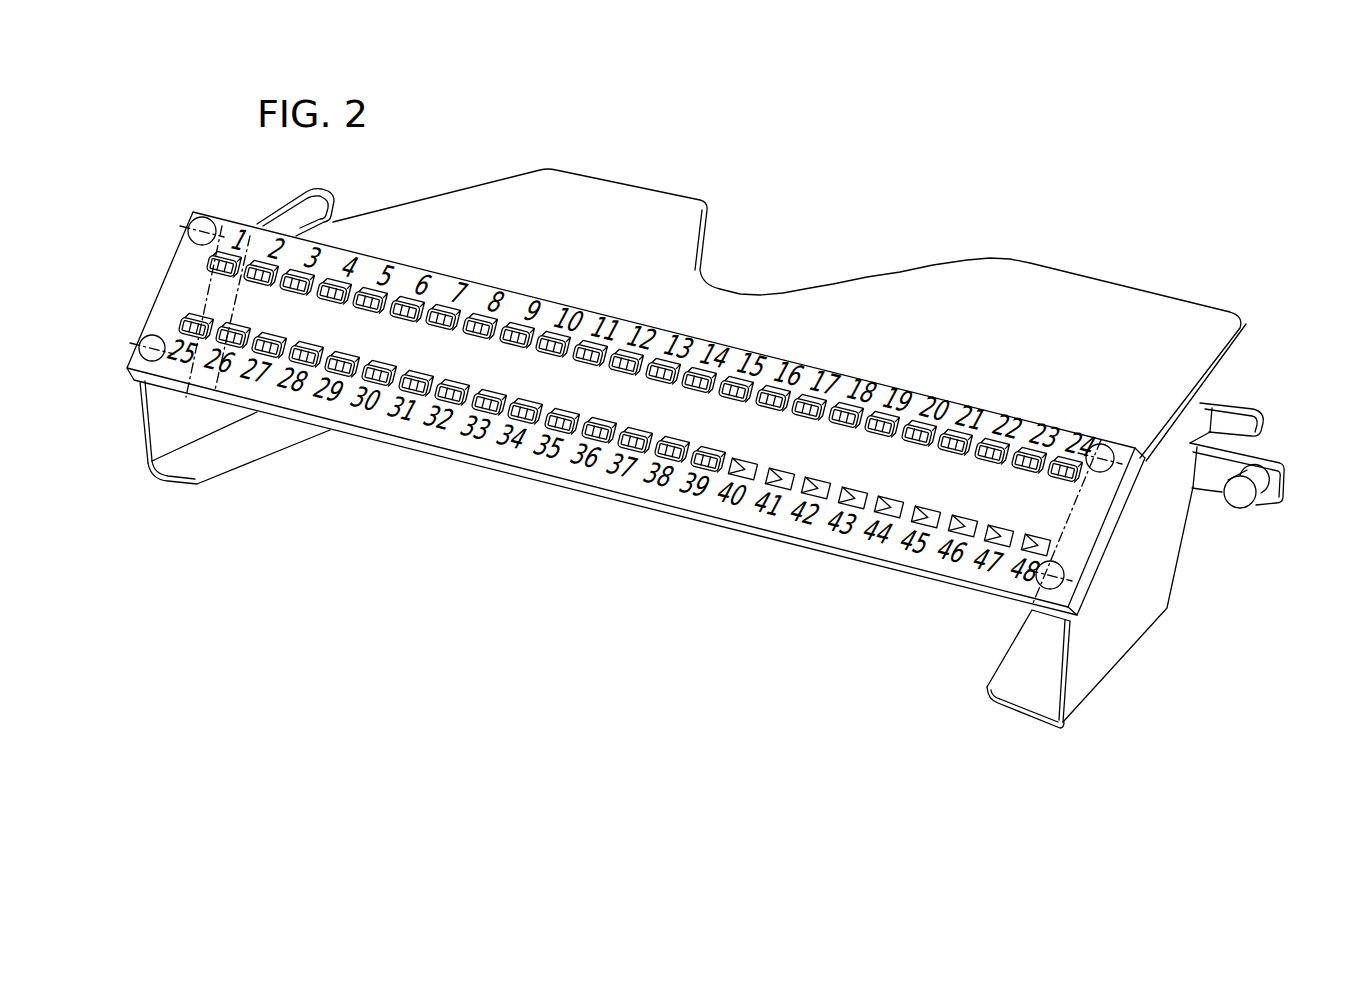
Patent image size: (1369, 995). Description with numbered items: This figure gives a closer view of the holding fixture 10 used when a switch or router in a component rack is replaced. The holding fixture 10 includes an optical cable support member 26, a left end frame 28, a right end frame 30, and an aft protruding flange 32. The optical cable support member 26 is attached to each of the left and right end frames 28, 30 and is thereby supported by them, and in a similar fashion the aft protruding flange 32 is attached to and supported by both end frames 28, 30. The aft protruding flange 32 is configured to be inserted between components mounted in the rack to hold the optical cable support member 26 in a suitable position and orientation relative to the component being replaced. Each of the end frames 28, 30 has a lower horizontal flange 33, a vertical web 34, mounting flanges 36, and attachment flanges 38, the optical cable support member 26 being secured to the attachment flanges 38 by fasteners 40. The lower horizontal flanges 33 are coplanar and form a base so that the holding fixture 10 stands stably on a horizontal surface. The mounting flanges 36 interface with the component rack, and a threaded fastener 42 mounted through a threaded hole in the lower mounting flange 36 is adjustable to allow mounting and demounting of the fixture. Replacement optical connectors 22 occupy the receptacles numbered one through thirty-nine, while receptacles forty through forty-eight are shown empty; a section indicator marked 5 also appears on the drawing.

The section line for FIG. 5 is at (647, 318).
The holding fixture 10 is at (918, 166).
The replacement optical connectors 22 is at (712, 452).
The optical cable support member 26 is at (697, 527).
The left end frame 28 is at (103, 460).
The right end frame 30 is at (1215, 582).
The aft protruding flange 32 is at (1058, 352).
The lower horizontal flange 33 is at (245, 443).
The vertical web 34 is at (163, 437).
The mounting flanges 36 is at (302, 189).
The attachment flanges 38 is at (236, 296).
The fasteners 40 is at (200, 226).
The threaded fastener 42 is at (1250, 505).